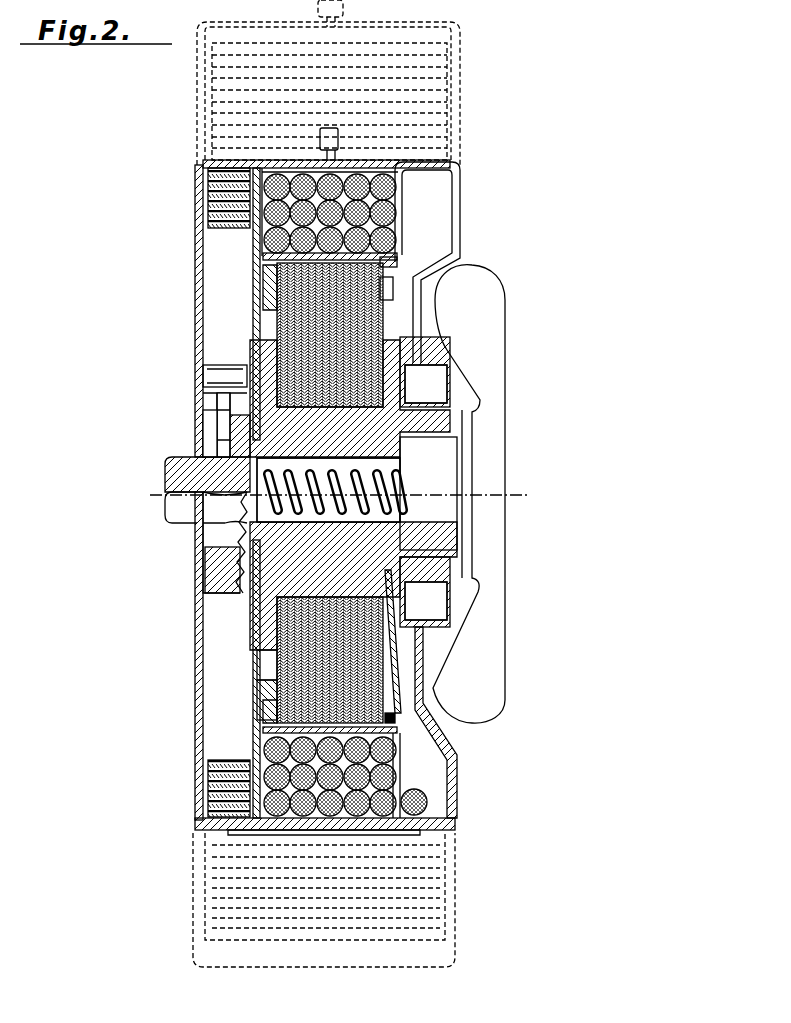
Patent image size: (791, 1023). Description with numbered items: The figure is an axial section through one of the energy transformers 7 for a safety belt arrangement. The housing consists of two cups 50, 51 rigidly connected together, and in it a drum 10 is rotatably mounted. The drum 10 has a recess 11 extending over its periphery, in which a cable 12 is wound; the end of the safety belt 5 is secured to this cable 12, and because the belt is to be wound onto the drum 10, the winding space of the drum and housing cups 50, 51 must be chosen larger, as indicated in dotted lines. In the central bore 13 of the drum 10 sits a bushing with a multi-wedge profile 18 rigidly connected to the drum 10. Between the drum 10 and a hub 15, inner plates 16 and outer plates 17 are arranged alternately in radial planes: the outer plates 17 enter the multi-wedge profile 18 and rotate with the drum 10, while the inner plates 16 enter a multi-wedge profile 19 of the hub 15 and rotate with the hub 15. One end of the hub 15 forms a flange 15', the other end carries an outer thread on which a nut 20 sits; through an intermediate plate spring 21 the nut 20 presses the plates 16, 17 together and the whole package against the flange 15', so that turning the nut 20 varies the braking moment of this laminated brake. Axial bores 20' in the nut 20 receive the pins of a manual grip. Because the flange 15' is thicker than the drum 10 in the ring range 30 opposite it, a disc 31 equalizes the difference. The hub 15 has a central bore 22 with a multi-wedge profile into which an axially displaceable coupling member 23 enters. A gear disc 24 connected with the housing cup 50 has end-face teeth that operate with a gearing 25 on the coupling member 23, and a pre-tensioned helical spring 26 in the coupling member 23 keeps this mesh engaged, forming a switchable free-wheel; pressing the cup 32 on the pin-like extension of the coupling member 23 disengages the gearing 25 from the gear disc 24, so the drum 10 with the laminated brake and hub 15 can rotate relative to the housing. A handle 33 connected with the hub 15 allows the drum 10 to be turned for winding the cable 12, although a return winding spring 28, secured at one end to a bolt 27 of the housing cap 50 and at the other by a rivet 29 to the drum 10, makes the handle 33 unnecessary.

The safety belt 5 is at (427, 870).
The energy transformer 7 is at (530, 102).
The drum 10 is at (437, 165).
The recess 11 is at (217, 823).
The cable 12 is at (418, 810).
The central bore 13 is at (393, 722).
The hub 15 is at (252, 586).
The flange 15' is at (162, 660).
The inner plates 16 is at (270, 710).
The outer plates 17 is at (270, 707).
The multi-wedge profile 18 is at (270, 265).
The multi-wedge profile 19 is at (265, 400).
The nut 20 is at (542, 627).
The axial bores 20' is at (546, 474).
The plate spring 21 is at (412, 648).
The central bore 22 is at (400, 425).
The coupling member 23 is at (197, 463).
The gear disc 24 is at (210, 555).
The gearing 25 is at (222, 517).
The helical spring 26 is at (400, 508).
The bolt 27 is at (213, 377).
The return winding spring 28 is at (205, 170).
The rivet 29 is at (227, 817).
The ring range 30 is at (393, 273).
The disc 31 is at (393, 296).
The cup 32 is at (168, 482).
The handle 33 is at (495, 450).
The housing cup 50 is at (255, 165).
The housing cup 51 is at (388, 163).